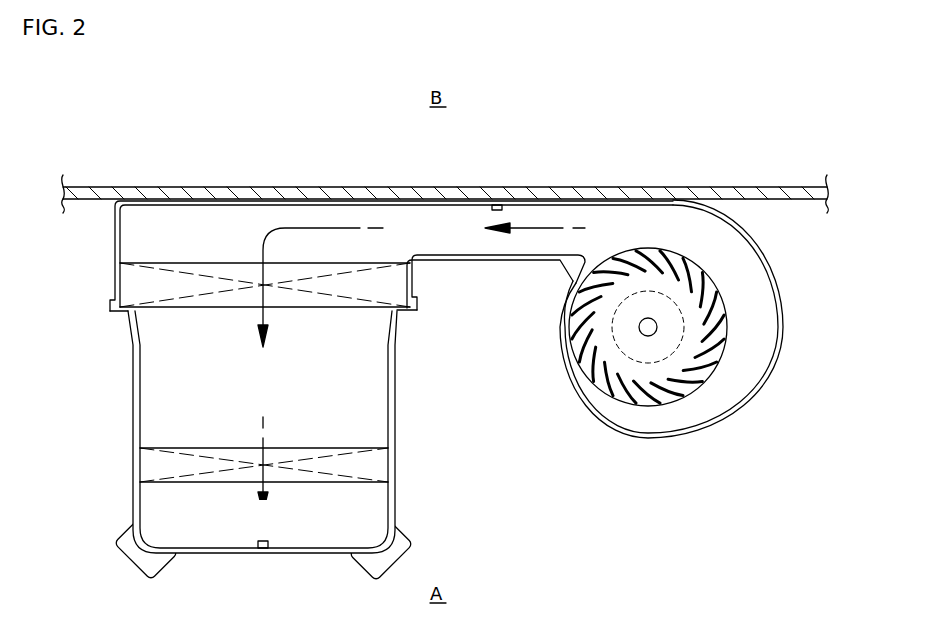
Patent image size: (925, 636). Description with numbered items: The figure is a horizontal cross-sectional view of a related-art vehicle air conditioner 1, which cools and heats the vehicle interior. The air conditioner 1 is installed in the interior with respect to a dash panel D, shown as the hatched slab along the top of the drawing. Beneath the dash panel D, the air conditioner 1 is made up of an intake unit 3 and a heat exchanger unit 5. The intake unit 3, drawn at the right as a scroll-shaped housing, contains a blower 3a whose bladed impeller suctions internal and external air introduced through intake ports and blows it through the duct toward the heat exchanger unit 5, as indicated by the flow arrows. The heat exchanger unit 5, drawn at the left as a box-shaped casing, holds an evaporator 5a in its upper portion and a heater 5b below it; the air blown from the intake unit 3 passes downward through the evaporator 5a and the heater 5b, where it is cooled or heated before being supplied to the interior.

The dash panel D is at (128, 196).
The air conditioner 1 is at (574, 488).
The intake unit 3 is at (678, 438).
The blower 3a is at (707, 352).
The heat exchanger unit 5 is at (392, 428).
The evaporator 5a is at (140, 288).
The heater 5b is at (157, 467).